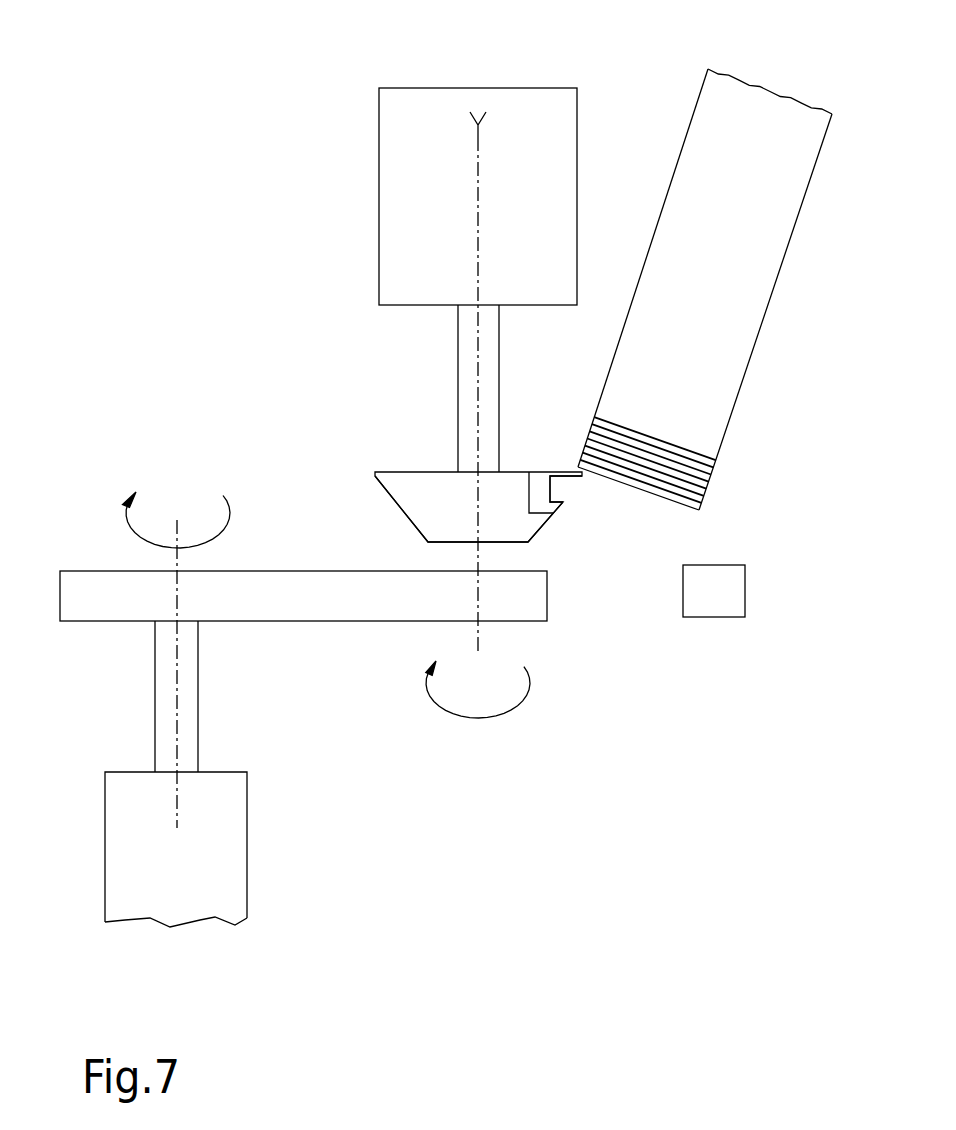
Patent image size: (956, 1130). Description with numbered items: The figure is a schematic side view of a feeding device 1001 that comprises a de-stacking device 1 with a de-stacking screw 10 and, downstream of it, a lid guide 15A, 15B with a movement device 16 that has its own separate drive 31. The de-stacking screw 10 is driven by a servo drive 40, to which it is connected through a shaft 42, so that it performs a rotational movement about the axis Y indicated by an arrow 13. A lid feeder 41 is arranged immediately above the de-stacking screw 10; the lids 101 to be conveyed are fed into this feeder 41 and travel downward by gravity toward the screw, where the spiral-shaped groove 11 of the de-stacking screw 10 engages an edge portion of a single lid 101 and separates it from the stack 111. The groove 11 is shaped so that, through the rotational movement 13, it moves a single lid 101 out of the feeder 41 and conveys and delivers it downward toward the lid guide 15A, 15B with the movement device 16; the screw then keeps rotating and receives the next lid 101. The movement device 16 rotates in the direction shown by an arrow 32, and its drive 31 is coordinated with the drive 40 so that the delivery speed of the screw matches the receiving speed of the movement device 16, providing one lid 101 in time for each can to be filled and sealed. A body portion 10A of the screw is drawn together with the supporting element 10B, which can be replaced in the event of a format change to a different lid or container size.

The feeding device 1001 is at (148, 145).
The de-stacking device 1 is at (316, 237).
The servo drive 40 is at (530, 103).
The shaft 42 is at (488, 372).
The de-stacking screw 10 is at (493, 475).
The holder body 10A is at (432, 507).
The supporting element 10B is at (540, 483).
The spiral-shaped groove 11 is at (560, 485).
The lid feeder 41 is at (715, 289).
The lid 101 is at (716, 452).
The stack 111 is at (697, 454).
The movement device 16 is at (345, 612).
The drive 31 is at (230, 817).
The arrow 32 is at (125, 527).
The arrow 13 is at (492, 718).
The lid guide 15A is at (724, 624).
The lid guide 15B is at (715, 600).